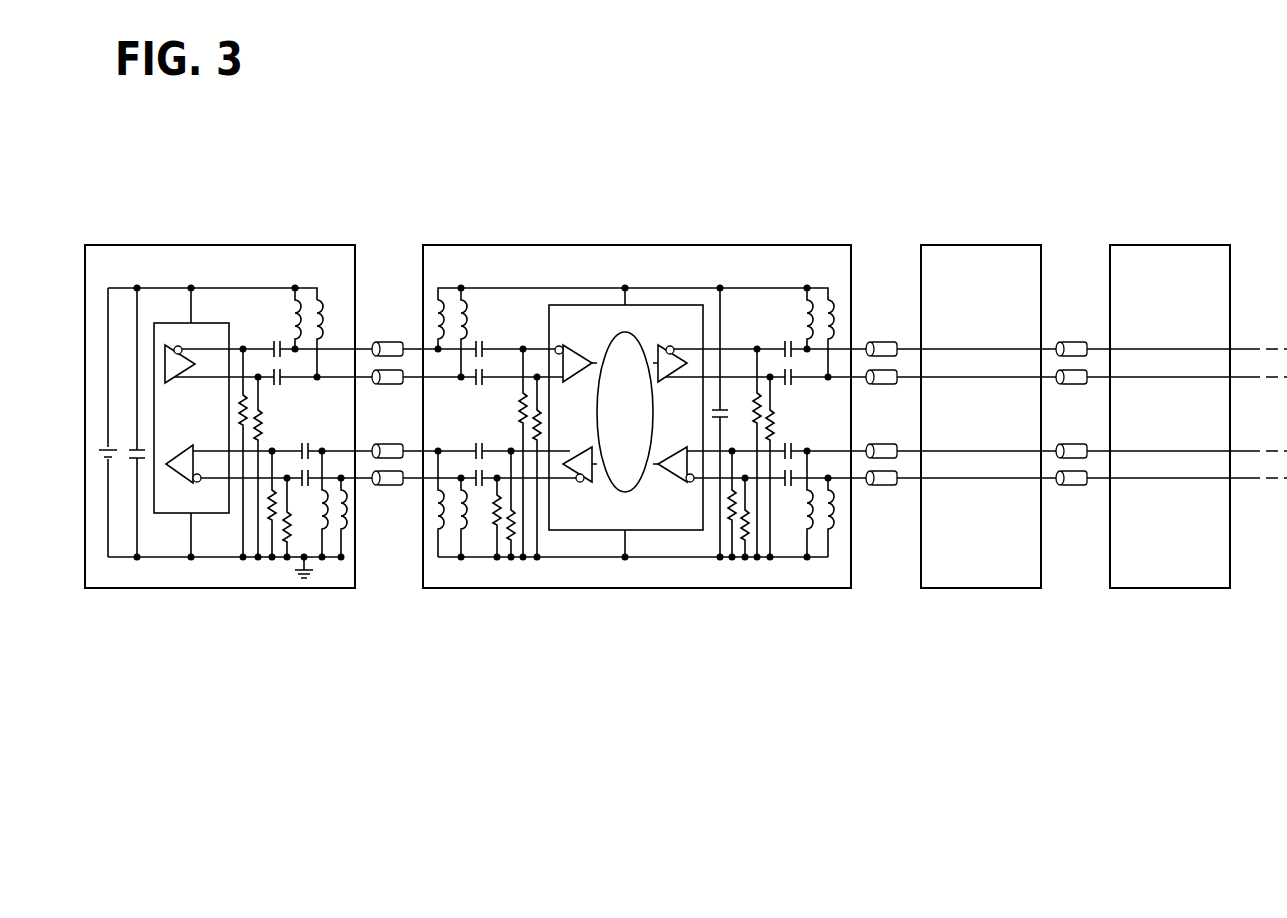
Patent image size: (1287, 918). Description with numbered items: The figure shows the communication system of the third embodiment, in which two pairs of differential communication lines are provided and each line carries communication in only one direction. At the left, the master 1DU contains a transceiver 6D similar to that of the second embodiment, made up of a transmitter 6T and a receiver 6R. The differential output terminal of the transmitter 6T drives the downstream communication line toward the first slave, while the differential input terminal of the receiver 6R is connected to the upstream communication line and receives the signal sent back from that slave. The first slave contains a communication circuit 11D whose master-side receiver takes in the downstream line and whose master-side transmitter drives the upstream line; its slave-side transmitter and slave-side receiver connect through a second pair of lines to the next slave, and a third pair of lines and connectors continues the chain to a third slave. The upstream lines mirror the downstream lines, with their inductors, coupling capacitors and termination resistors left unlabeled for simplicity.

The master 1DU is at (230, 244).
The transceiver 6D is at (222, 323).
The transmitter 6T is at (180, 351).
The receiver 6R is at (173, 450).
The communication circuit 11D is at (549, 325).